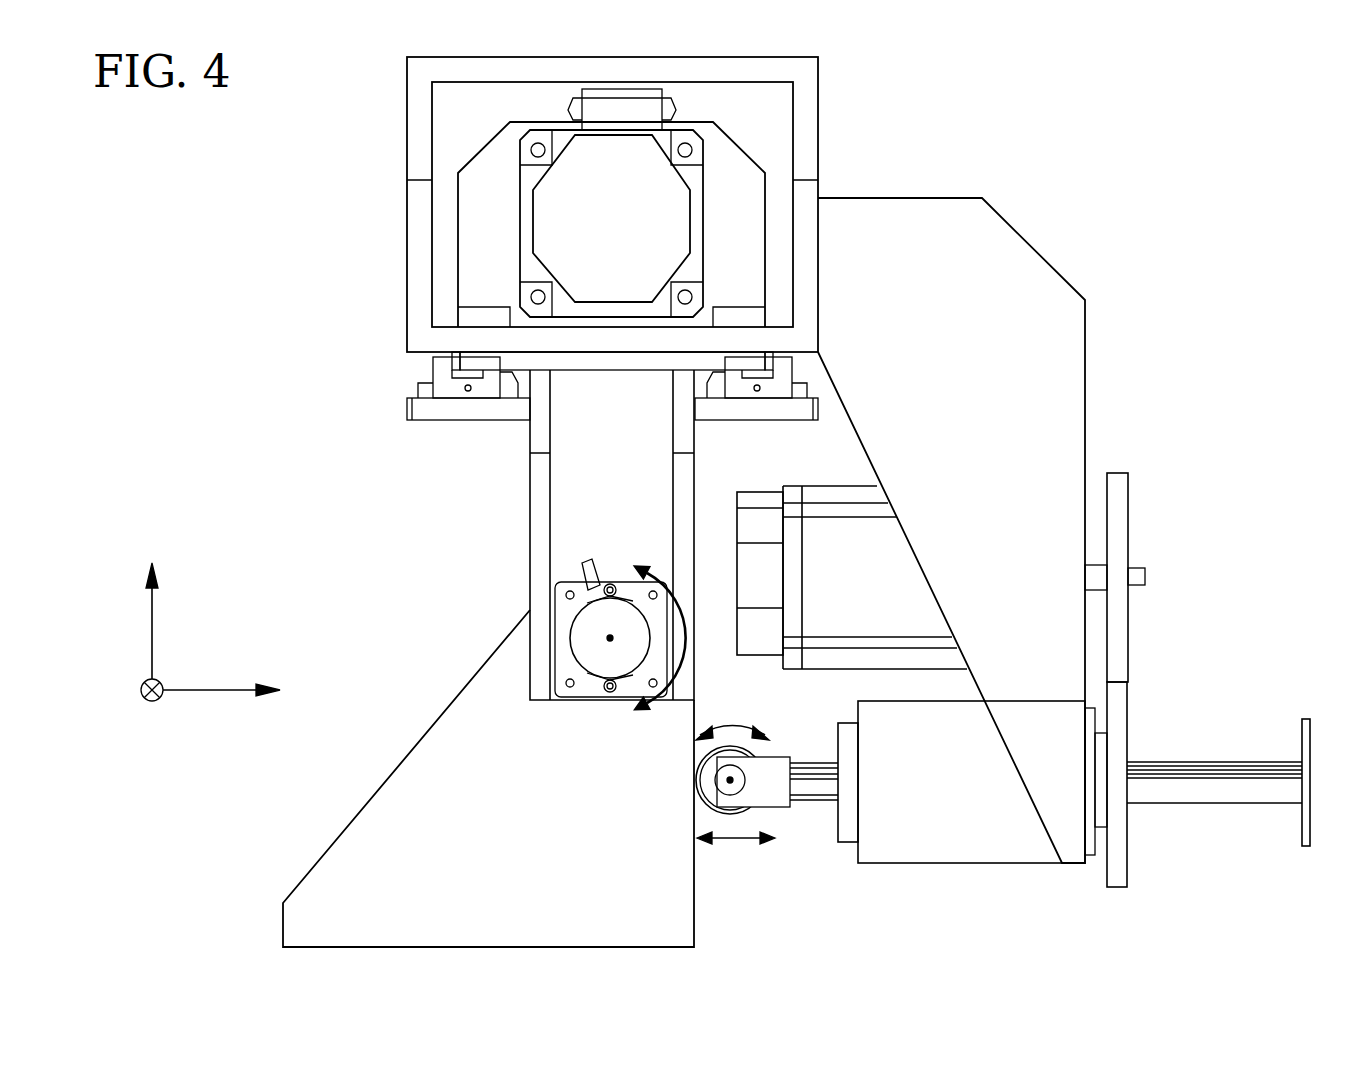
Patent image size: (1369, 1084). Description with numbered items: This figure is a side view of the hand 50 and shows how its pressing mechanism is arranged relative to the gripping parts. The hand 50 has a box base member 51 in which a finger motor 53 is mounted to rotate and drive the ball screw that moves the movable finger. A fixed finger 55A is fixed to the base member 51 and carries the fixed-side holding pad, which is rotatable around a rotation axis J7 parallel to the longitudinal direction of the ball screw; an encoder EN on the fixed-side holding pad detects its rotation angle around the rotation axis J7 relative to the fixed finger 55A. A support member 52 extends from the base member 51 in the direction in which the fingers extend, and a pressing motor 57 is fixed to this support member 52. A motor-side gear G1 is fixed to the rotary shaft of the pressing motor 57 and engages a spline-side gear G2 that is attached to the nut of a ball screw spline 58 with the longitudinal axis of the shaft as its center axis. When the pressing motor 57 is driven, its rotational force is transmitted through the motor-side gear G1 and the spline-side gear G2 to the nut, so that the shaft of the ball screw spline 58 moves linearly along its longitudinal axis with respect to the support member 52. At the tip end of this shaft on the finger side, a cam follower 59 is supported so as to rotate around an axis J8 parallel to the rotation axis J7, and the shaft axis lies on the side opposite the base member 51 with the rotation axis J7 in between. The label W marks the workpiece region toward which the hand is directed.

The hand 50 is at (1082, 138).
The base member 51 is at (818, 83).
The support member 52 is at (1085, 368).
The finger motor 53 is at (707, 180).
The fixed finger 55A is at (530, 514).
The pressing motor 57 is at (832, 485).
The ball screw spline 58 is at (1232, 815).
The cam follower 59 is at (712, 812).
The encoder EN is at (568, 628).
The rotation axis J7 is at (610, 638).
The axis J8 is at (730, 780).
The motor-side gear G1 is at (1128, 537).
The spline-side gear G2 is at (1130, 706).
The workpiece / base W is at (357, 810).